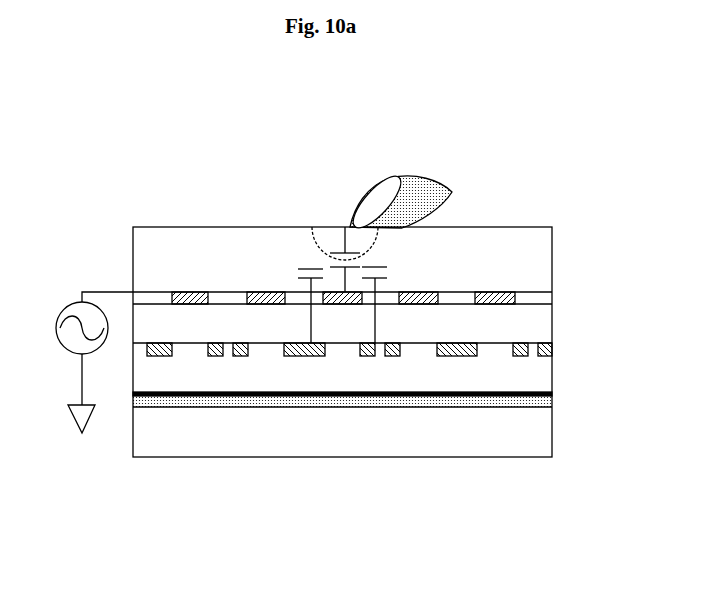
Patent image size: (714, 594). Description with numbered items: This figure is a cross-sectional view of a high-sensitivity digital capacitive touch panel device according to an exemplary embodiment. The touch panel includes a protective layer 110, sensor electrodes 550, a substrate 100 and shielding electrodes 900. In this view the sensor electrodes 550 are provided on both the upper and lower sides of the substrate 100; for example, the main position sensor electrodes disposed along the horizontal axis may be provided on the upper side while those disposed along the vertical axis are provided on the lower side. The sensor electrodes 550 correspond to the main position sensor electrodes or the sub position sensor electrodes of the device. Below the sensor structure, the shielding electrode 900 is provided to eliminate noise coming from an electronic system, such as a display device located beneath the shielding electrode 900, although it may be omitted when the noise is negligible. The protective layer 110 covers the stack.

The substrate 100 is at (336, 348).
The protective layer 110 is at (173, 325).
The sensor electrodes 550 is at (529, 298).
The shielding electrodes 900 is at (533, 409).